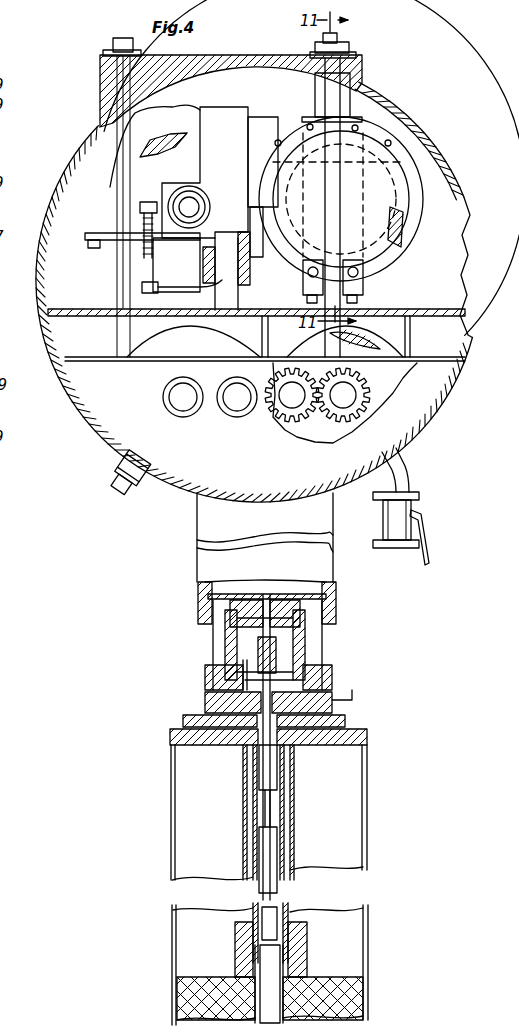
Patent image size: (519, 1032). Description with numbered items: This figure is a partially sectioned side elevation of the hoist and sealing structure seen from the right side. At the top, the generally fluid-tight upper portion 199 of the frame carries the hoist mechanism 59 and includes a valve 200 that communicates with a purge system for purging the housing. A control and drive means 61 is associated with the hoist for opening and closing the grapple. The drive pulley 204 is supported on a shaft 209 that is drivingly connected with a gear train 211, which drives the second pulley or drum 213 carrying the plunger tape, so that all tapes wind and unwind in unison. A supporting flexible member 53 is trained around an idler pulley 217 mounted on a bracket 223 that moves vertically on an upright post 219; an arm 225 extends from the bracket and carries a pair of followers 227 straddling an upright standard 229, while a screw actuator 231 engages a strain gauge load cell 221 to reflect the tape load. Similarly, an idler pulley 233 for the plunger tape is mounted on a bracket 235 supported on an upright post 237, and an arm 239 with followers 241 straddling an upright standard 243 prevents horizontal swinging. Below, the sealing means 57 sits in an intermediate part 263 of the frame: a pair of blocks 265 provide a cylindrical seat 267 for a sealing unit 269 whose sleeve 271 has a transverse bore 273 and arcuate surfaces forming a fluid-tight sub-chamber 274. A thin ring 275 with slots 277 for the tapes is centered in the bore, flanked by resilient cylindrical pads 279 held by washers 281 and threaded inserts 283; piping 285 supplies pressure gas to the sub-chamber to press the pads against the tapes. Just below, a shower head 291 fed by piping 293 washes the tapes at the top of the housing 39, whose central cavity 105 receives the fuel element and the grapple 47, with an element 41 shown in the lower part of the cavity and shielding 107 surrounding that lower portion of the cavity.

The upper portion of the frame 199 is at (75, 152).
The upright standard 229 is at (128, 125).
The upright standard 243 is at (333, 88).
The upright post 237 is at (345, 98).
The bracket 235 is at (355, 120).
The control and drive means 61 is at (384, 172).
The idler pulley 233 is at (404, 228).
The bracket 223 is at (236, 124).
The upright post 219 is at (256, 100).
The idler pulley 217 is at (165, 140).
The arm 225 is at (108, 233).
The followers 227 is at (115, 262).
The screw actuator 231 is at (176, 265).
The strain gauge load cell 221 is at (153, 300).
The followers 241 is at (355, 270).
The arm 239 is at (352, 302).
The drive pulley 204 is at (209, 341).
The second pulley or drum 213 is at (355, 343).
The hoist mechanism 59 is at (152, 376).
The shaft 209 is at (183, 400).
The gear train 211 is at (320, 424).
The valve 200 is at (418, 516).
The blocks 265 is at (212, 603).
The fluid-tight sub-chamber 274 is at (330, 610).
The cylindrical seat 267 is at (230, 605).
The intermediate part of the frame 263 is at (308, 623).
The transverse bore 273 is at (277, 645).
The thin ring 275 is at (260, 653).
The washer 281 is at (243, 656).
The sealing means 57 is at (314, 652).
The sealing unit 269 is at (220, 656).
The cylindrical pad 279 is at (272, 670).
The insert 283 is at (297, 652).
The piping 285 is at (350, 680).
The sleeve 271 is at (245, 603).
The slots 277 is at (255, 607).
The piping 293 is at (170, 738).
The housing 39 is at (368, 790).
The shower head 291 is at (242, 740).
The flexible member 53 is at (308, 746).
The grapple 47 is at (283, 884).
The needle 41 is at (273, 965).
The central cavity 105 is at (283, 990).
The shielding 107 is at (363, 997).